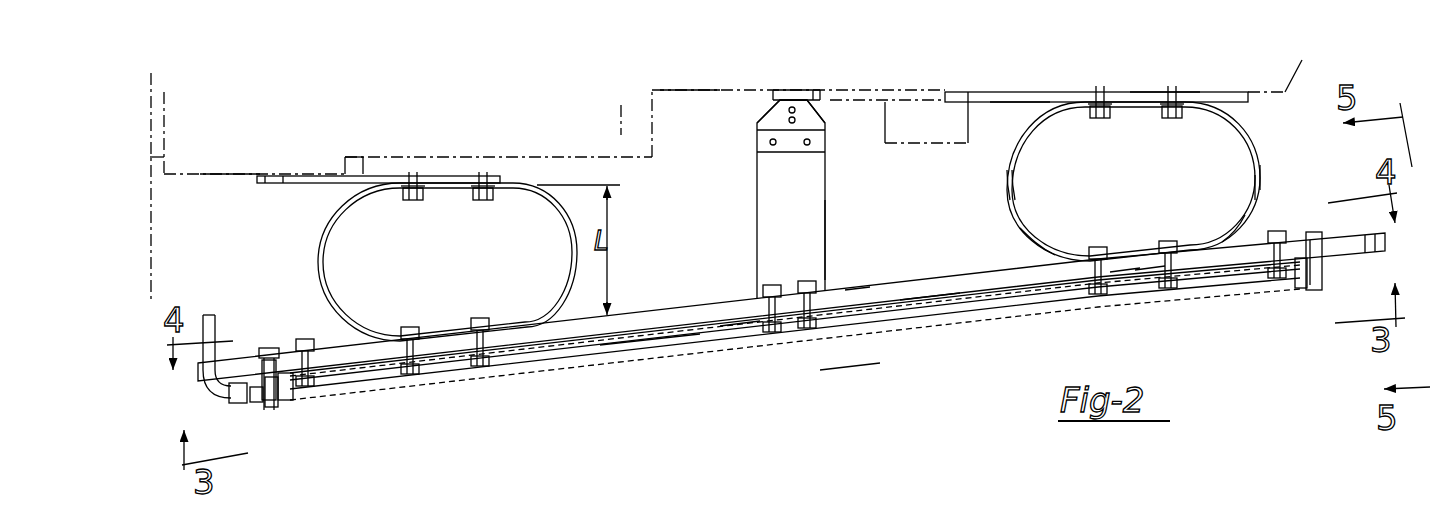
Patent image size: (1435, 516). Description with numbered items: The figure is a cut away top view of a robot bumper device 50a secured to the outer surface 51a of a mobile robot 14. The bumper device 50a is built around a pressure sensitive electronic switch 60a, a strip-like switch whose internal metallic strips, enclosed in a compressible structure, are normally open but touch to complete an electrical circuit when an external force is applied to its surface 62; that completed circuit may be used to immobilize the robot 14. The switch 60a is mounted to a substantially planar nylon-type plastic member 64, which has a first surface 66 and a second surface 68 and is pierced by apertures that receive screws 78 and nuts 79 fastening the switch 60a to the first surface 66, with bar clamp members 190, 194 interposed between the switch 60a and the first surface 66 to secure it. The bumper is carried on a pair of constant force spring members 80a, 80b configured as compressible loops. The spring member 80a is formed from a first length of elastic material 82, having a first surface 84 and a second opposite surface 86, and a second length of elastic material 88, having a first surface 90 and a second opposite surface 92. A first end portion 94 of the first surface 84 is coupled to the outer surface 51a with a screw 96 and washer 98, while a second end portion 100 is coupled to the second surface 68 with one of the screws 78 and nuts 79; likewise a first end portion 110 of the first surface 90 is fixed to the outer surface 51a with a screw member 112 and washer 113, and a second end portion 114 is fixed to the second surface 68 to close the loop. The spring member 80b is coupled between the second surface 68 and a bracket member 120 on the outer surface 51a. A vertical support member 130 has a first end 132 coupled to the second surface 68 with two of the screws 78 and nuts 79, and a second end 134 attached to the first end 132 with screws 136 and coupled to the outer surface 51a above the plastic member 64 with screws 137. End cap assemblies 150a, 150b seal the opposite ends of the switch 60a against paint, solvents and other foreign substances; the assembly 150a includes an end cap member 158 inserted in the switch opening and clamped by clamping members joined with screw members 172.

The mobile robot 14 is at (508, 75).
The bumper device 50a is at (850, 380).
The outer surface 51a is at (212, 182).
The pressure sensitive electronic switch 60a is at (623, 356).
The surface 62 is at (566, 386).
The plastic member 64 is at (681, 320).
The first surface 66 is at (1354, 258).
The second surface 68 is at (258, 350).
The screws 78 is at (310, 398).
The nuts 79 is at (311, 339).
The constant force spring member 80a is at (1275, 113).
The constant force spring member 80b is at (315, 248).
The first length of elastic material 82 is at (1028, 230).
The first surface 84 is at (1003, 181).
The second opposite surface 86 is at (1016, 180).
The second length of elastic material 88 is at (1254, 215).
The first surface 90 is at (1262, 170).
The second opposite surface 92 is at (1252, 187).
The first end portion 94 is at (1118, 93).
The screw 96 is at (1099, 118).
The washer 98 is at (1125, 112).
The second end portion 100 is at (1125, 268).
The first end portion 110 is at (1178, 47).
The screw member 112 is at (1174, 114).
The washer 113 is at (1163, 116).
The second end portion 114 is at (1148, 268).
The bracket member 120 is at (363, 182).
The vertical support member 130 is at (752, 207).
The first end 132 is at (834, 281).
The second end 134 is at (826, 110).
The screws 136 is at (805, 143).
The screws 137 is at (820, 116).
The end cap assembly 150a is at (253, 428).
The end cap assembly 150b is at (1313, 302).
The end cap member 158 is at (287, 312).
The screw members 172 is at (285, 402).
The bar clamp member 190 is at (744, 320).
The bar clamp member 194 is at (942, 310).